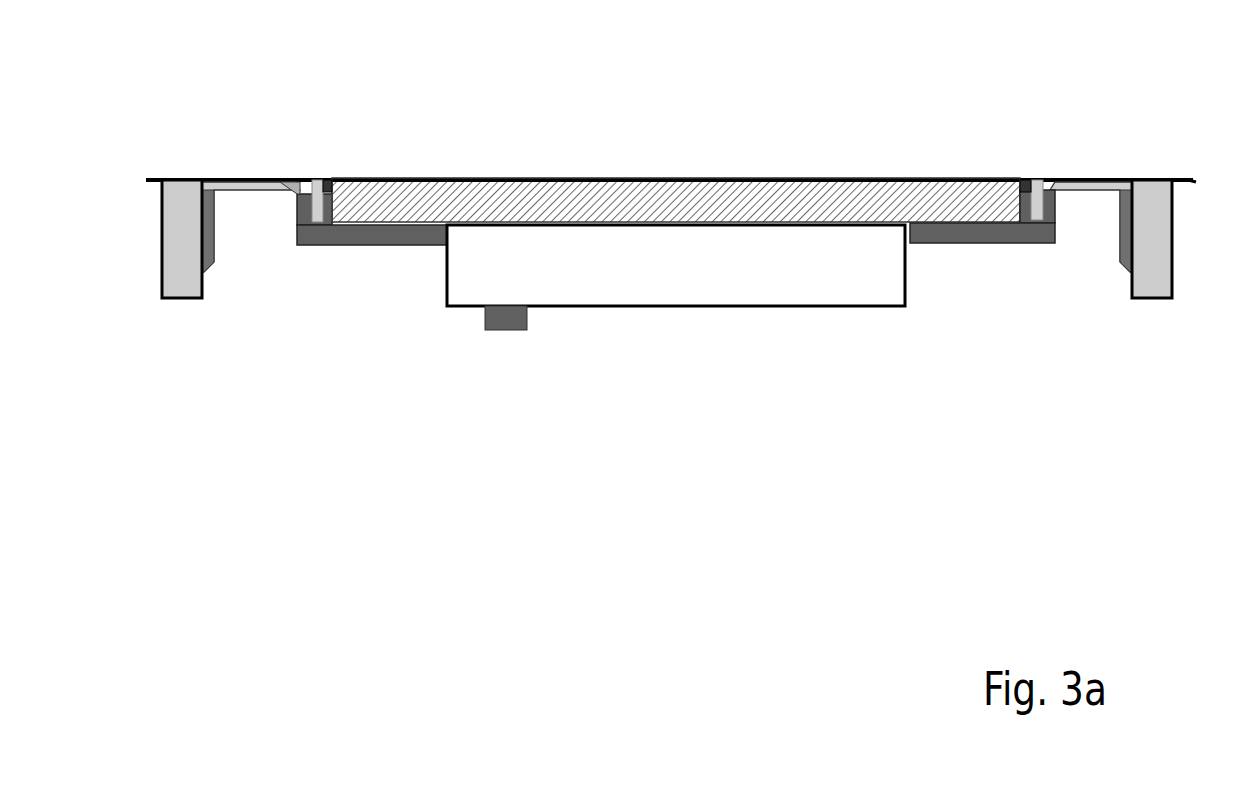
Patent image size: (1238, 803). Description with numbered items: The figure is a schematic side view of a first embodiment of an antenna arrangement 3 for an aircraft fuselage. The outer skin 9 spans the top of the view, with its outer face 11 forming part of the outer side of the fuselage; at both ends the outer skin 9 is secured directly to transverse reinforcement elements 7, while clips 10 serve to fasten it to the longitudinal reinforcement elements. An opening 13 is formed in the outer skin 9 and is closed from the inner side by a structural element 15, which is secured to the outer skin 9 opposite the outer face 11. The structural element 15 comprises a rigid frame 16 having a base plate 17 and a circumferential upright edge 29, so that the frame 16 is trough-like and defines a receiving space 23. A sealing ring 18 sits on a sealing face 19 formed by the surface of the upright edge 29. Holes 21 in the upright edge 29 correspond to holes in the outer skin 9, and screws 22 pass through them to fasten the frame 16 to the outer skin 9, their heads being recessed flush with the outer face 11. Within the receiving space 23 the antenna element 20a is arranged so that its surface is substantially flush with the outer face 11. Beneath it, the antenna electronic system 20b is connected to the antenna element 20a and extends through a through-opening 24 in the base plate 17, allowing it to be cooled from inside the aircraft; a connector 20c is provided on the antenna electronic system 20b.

The antenna arrangement 3 is at (200, 100).
The transverse reinforcement element 7 is at (180, 290).
The outer skin 9 is at (1193, 182).
The clip 10 is at (208, 232).
The outer face 11 is at (1180, 182).
The opening 13 is at (1028, 183).
The structural element 15 is at (703, 362).
The frame 16 is at (967, 260).
The base plate 17 is at (370, 236).
The sealing ring 18 is at (335, 178).
The sealing face 19 is at (297, 195).
The antenna element 20a is at (580, 188).
The antenna electronic system 20b is at (795, 286).
The connector 20c is at (508, 322).
The holes 21 is at (315, 248).
The screws 22 is at (315, 180).
The receiving space 23 is at (348, 200).
The through-opening 24 is at (445, 245).
The upright edge 29 is at (1053, 215).